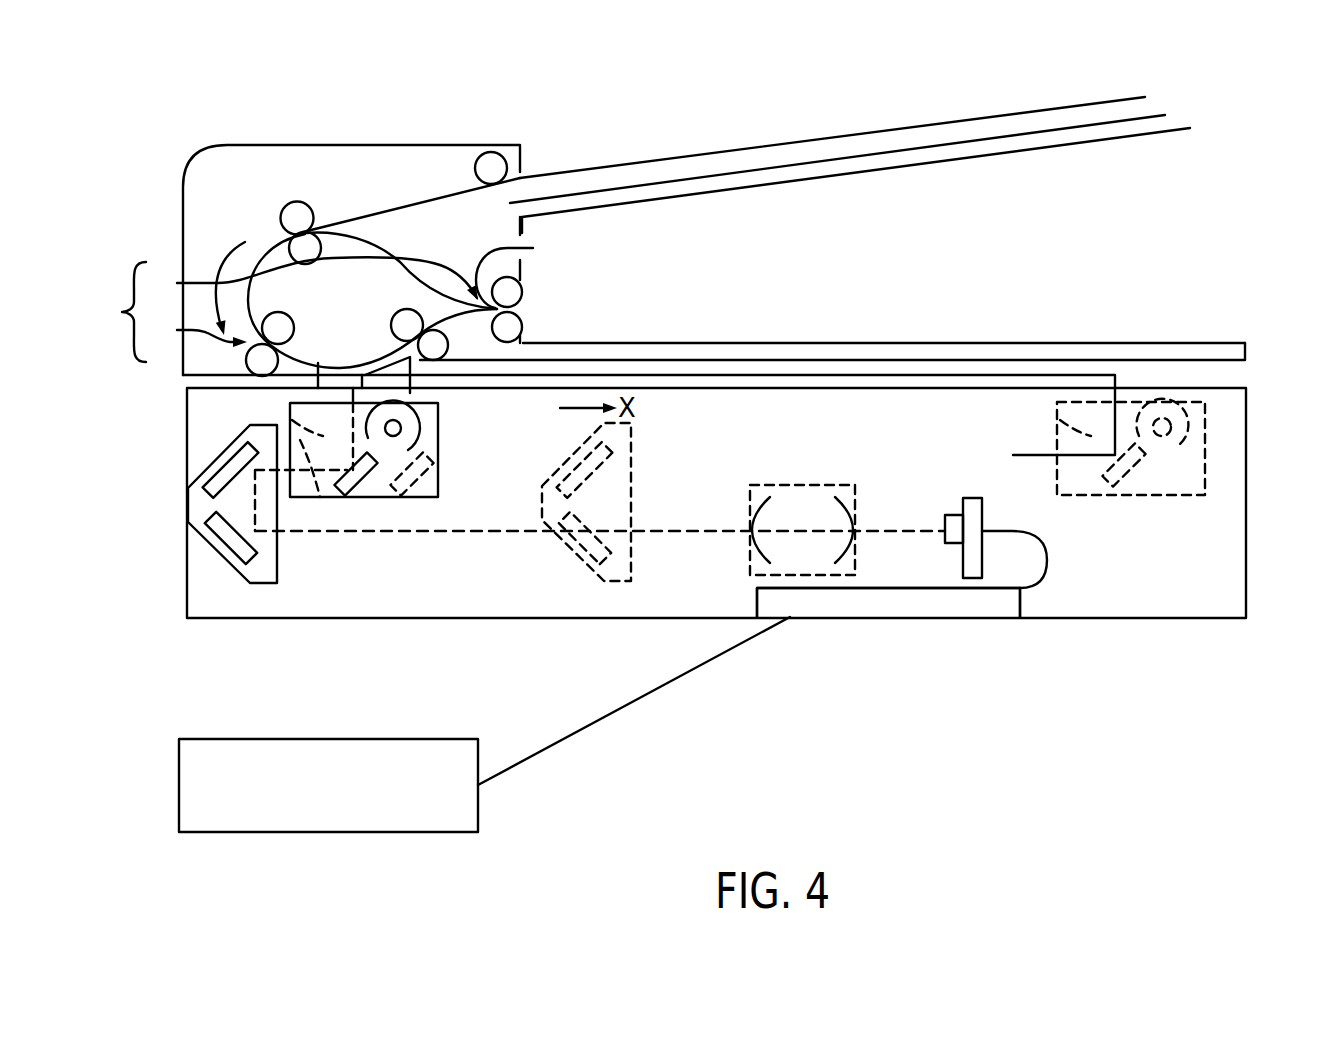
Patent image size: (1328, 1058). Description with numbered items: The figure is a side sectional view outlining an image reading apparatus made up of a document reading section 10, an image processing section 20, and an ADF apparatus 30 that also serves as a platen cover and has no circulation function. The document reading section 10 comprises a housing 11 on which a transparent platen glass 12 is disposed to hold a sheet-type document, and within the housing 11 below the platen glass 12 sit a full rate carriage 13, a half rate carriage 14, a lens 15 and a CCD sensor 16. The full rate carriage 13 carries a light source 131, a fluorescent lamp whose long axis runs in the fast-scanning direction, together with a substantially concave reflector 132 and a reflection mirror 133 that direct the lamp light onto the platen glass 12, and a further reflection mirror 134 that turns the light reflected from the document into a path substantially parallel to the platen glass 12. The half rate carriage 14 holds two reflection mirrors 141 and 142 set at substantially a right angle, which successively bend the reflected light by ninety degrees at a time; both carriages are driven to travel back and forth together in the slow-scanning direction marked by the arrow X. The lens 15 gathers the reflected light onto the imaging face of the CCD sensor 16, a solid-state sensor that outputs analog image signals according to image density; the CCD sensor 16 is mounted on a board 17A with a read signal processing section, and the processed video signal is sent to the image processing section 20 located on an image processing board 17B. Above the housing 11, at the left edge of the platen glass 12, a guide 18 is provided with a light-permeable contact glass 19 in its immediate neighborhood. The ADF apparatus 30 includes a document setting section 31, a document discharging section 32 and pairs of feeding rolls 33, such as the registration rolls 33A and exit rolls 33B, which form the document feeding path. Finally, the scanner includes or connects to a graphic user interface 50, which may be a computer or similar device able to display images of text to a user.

The document reading section 10 is at (1240, 450).
The housing 11 is at (1248, 517).
The platen glass 12 is at (937, 380).
The full rate carriage 13 is at (440, 488).
The light source 131 is at (412, 452).
The reflector 132 is at (405, 427).
The reflection mirror 133 is at (341, 493).
The reflection mirror 134 is at (364, 483).
The half rate carriage 14 is at (238, 570).
The reflection mirror 141 is at (210, 477).
The reflection mirror 142 is at (213, 537).
The lens 15 is at (748, 553).
The CCD sensor 16 is at (945, 530).
The board 17A is at (982, 505).
The image processing board 17B is at (1020, 603).
The guide 18 is at (403, 380).
The contact glass 19 is at (342, 382).
The image processing section 20 is at (852, 610).
The ADF apparatus 30 is at (330, 117).
The document setting section 31 is at (648, 158).
The document discharging section 32 is at (610, 338).
The feeding rolls 33 is at (121, 312).
The registration rolls 33A is at (312, 279).
The exit rolls 33B is at (195, 331).
The graphic user interface 50 is at (179, 790).